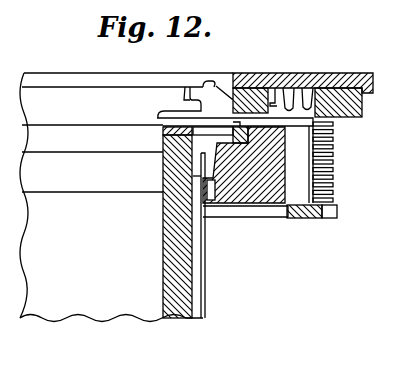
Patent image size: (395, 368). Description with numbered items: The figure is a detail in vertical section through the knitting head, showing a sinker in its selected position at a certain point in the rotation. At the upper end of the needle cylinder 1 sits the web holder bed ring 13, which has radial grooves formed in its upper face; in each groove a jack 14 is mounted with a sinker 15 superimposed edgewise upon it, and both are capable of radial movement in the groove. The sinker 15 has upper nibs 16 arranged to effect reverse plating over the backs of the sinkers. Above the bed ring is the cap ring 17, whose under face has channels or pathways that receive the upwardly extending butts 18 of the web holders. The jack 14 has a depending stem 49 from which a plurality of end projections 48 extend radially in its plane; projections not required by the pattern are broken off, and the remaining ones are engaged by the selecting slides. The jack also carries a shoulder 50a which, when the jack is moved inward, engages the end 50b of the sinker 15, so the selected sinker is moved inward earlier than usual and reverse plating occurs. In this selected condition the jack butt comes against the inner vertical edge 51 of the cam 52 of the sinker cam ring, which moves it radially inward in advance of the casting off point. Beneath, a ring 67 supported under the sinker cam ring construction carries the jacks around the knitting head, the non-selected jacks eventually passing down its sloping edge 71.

The cap ring 17 is at (123, 69).
The sinker 15 is at (200, 91).
The upper nibs 16 is at (207, 80).
The inner vertical edge 51 is at (344, 79).
The upwardly extending butts 18 is at (262, 87).
The cam 52 is at (328, 103).
The end of the sinker 50b is at (290, 106).
The shoulder 50a is at (310, 95).
The jack 14 is at (305, 122).
The depending stem 49 is at (308, 160).
The end projections 48 is at (335, 141).
The sloping edge 71 is at (337, 213).
The web holder bed ring 13 is at (238, 208).
The ring 67 is at (286, 210).
The needle cylinder 1 is at (178, 287).